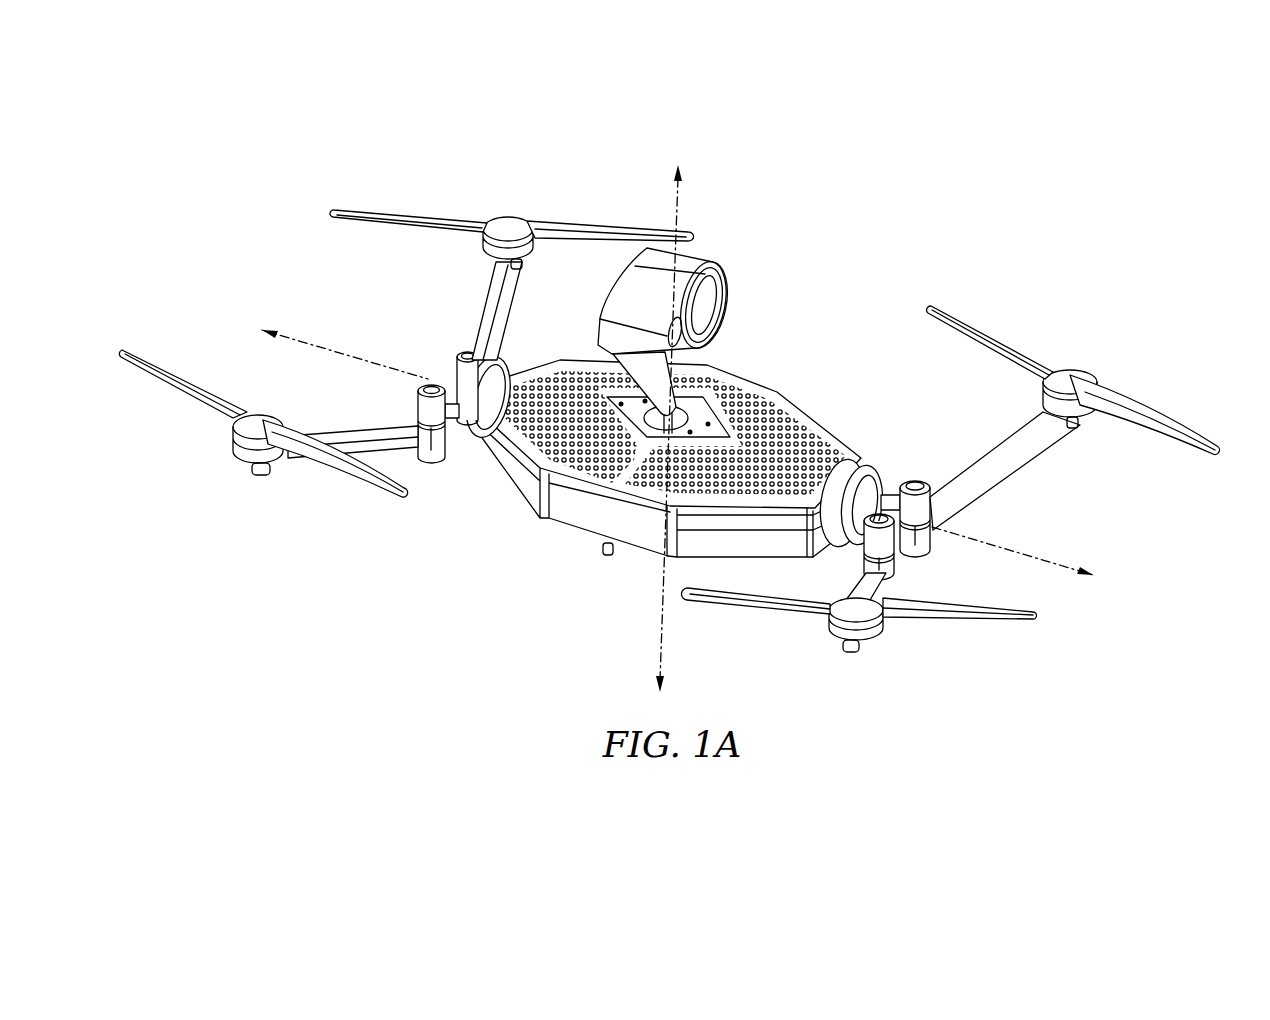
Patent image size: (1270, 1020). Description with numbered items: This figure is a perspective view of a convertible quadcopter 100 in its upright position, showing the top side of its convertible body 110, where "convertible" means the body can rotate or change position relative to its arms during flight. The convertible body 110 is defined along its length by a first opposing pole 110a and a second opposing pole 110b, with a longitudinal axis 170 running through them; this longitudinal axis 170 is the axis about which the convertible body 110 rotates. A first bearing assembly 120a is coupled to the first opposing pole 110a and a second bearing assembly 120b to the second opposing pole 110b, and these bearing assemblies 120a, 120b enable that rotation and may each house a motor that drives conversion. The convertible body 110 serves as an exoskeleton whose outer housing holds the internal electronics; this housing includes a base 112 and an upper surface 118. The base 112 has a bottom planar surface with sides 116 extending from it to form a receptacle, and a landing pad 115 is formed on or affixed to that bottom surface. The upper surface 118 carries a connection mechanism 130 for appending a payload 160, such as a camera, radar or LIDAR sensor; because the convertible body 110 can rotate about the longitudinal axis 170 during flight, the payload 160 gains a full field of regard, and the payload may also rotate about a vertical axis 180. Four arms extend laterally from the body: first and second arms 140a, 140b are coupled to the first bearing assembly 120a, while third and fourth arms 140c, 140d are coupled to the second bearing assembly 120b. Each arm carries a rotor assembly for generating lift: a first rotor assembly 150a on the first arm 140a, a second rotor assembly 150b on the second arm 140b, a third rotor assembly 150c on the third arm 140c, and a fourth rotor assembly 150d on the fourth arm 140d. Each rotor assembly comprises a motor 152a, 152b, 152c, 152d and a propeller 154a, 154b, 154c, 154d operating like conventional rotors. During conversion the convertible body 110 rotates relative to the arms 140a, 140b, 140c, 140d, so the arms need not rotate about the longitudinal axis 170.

The quadcopter 100 is at (668, 429).
The convertible body 110 is at (662, 480).
The first opposing pole 110a is at (881, 494).
The second opposing pole 110b is at (477, 392).
The base 112 is at (580, 538).
The landing pad 115 is at (600, 558).
The sides 116 is at (697, 545).
The upper surface 118 is at (800, 412).
The first bearing assembly 120a is at (858, 470).
The second bearing assembly 120b is at (500, 357).
The connection mechanism 130 is at (703, 390).
The first arm 140a is at (1030, 456).
The second arm 140b is at (885, 578).
The third arm 140c is at (490, 293).
The fourth arm 140d is at (372, 430).
The first rotor assembly 150a is at (1073, 375).
The second rotor assembly 150b is at (870, 641).
The third rotor assembly 150c is at (512, 225).
The fourth rotor assembly 150d is at (262, 424).
The motor 152a is at (1040, 392).
The motor 152b is at (832, 642).
The motor 152c is at (478, 248).
The motor 152d is at (250, 470).
The propeller 154a is at (985, 325).
The propeller 154b is at (975, 620).
The propeller 154c is at (415, 213).
The propeller 154d is at (170, 372).
The payload 160 is at (715, 262).
The longitudinal axis 170 is at (1055, 572).
The vertical axis 180 is at (684, 196).